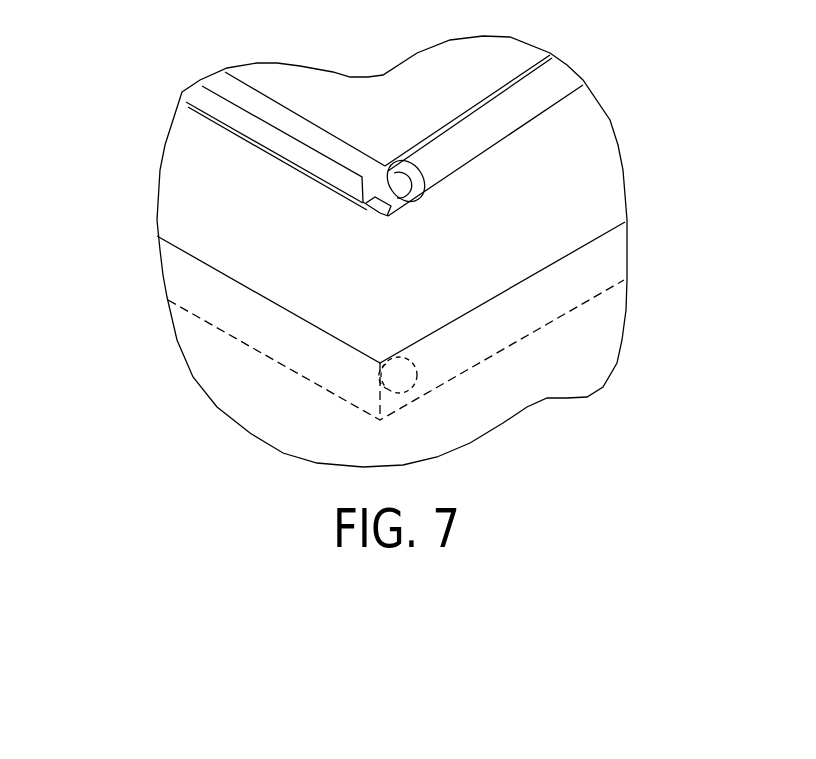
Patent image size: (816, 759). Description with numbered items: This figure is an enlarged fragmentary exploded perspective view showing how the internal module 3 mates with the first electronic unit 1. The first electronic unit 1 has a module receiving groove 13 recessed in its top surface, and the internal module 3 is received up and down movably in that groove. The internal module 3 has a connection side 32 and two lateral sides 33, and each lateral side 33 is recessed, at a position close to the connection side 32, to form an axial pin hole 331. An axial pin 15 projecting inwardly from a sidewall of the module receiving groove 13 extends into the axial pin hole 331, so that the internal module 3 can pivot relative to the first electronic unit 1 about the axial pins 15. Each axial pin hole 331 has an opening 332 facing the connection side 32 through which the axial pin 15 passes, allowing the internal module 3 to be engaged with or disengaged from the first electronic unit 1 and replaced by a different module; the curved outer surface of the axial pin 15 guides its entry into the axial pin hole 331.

The first electronic unit 1 is at (410, 352).
The module receiving groove 13 is at (478, 265).
The axial pin 15 is at (403, 373).
The internal module 3 is at (376, 141).
The connection side 32 is at (258, 132).
The lateral side 33 is at (528, 96).
The axial pin hole 331 is at (412, 173).
The opening 332 is at (385, 203).